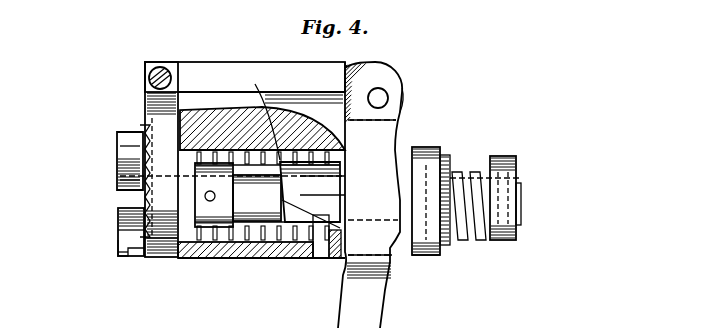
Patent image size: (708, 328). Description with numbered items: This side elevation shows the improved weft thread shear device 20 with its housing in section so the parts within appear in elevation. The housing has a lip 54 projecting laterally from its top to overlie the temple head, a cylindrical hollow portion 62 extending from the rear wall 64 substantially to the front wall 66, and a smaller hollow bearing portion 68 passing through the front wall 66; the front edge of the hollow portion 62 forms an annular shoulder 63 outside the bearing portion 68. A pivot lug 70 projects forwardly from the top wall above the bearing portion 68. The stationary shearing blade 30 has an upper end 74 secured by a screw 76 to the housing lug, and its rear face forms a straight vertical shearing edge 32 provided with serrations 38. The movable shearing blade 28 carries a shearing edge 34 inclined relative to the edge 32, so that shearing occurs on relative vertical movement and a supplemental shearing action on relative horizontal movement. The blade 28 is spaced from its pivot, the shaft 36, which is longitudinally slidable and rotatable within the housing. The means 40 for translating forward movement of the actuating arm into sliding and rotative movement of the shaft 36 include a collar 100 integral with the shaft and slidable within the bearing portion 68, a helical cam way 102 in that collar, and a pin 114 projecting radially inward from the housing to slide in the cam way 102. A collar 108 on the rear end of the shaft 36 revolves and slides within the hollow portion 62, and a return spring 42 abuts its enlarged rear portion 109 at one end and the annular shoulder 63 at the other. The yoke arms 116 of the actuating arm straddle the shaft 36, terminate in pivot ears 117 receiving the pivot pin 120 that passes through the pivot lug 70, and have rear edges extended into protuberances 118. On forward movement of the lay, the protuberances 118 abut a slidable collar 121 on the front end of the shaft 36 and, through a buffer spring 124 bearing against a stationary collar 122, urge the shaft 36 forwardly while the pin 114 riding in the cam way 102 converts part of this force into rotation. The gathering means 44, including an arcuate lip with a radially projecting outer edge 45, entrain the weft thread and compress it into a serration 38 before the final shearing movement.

The weft shear device 20 is at (122, 104).
The movable shearing blade 28 is at (130, 140).
The stationary shearing blade 30 is at (160, 192).
The straight shearing edge 32 is at (140, 150).
The inclined shearing edge 34 is at (140, 178).
The pivot shaft 36 is at (267, 195).
The serrations 38 is at (140, 215).
The transmitting and translating means 40 is at (340, 197).
The return spring 42 is at (230, 258).
The gathering means 44 is at (130, 228).
The outer edge 45 is at (125, 258).
The lip 54 is at (222, 80).
The cylindrical hollow portion 62 is at (276, 260).
The annular shoulder 63 is at (316, 259).
The rear wall 64 is at (145, 122).
The front wall 66 is at (312, 104).
The hollow bearing portion 68 is at (340, 172).
The pivot lug 70 is at (366, 70).
The upper end of stationary blade 74 is at (147, 96).
The screw 76 is at (156, 70).
The collar 100 is at (410, 112).
The helical cam way 102 is at (296, 212).
The rear collar 108 is at (207, 255).
The enlarged rear portion 109 is at (188, 218).
The pin 114 is at (342, 234).
The yoke arms 116 is at (382, 136).
The pivot ears 117 is at (402, 98).
The protuberances 118 is at (404, 160).
The pivot pin 120 is at (380, 98).
The slidable collar 121 is at (436, 256).
The stationary collar 122 is at (518, 164).
The buffer spring 124 is at (480, 168).